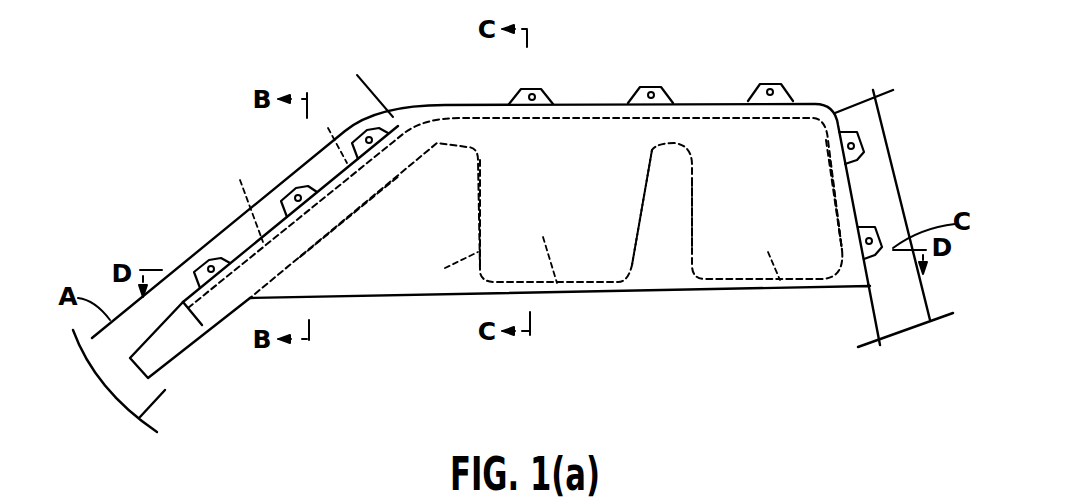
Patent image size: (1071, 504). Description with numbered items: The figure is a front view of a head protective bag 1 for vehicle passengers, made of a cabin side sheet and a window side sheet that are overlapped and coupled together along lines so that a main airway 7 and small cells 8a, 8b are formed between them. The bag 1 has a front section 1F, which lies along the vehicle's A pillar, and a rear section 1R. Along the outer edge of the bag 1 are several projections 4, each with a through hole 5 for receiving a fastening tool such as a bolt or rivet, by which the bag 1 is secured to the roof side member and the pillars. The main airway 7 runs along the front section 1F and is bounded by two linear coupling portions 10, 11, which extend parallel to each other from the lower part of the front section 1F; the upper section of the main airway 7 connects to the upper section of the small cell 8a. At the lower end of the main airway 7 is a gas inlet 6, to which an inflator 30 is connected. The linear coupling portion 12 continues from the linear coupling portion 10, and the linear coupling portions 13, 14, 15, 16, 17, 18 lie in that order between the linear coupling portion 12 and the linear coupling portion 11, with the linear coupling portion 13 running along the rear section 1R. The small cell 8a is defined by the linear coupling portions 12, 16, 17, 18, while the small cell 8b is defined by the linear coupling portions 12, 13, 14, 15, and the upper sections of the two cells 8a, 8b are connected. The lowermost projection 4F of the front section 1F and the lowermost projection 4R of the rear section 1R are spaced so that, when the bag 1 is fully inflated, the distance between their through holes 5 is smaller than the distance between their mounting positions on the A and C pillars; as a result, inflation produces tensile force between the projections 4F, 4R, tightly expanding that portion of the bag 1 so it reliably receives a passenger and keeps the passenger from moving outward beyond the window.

The head protective bag 1 is at (712, 58).
The front section 1F is at (283, 220).
The rear section 1R is at (860, 204).
The projection 4 is at (545, 90).
The lowermost projection of the front section 4F is at (232, 250).
The lowermost projection of the rear section 4R is at (877, 263).
The through hole 5 is at (520, 97).
The gas inlet 6 is at (198, 335).
The main airway 7 is at (248, 203).
The small cell 8a is at (492, 213).
The small cell 8b is at (870, 167).
The linear coupling portion 10 is at (331, 131).
The linear coupling portion 11 is at (340, 227).
The linear coupling portion 12 is at (557, 120).
The linear coupling portion 13 is at (823, 172).
The linear coupling portion 14 is at (769, 252).
The linear coupling portion 15 is at (700, 198).
The linear coupling portion 16 is at (642, 193).
The linear coupling portion 17 is at (546, 253).
The linear coupling portion 18 is at (450, 265).
The inflator 30 is at (160, 378).